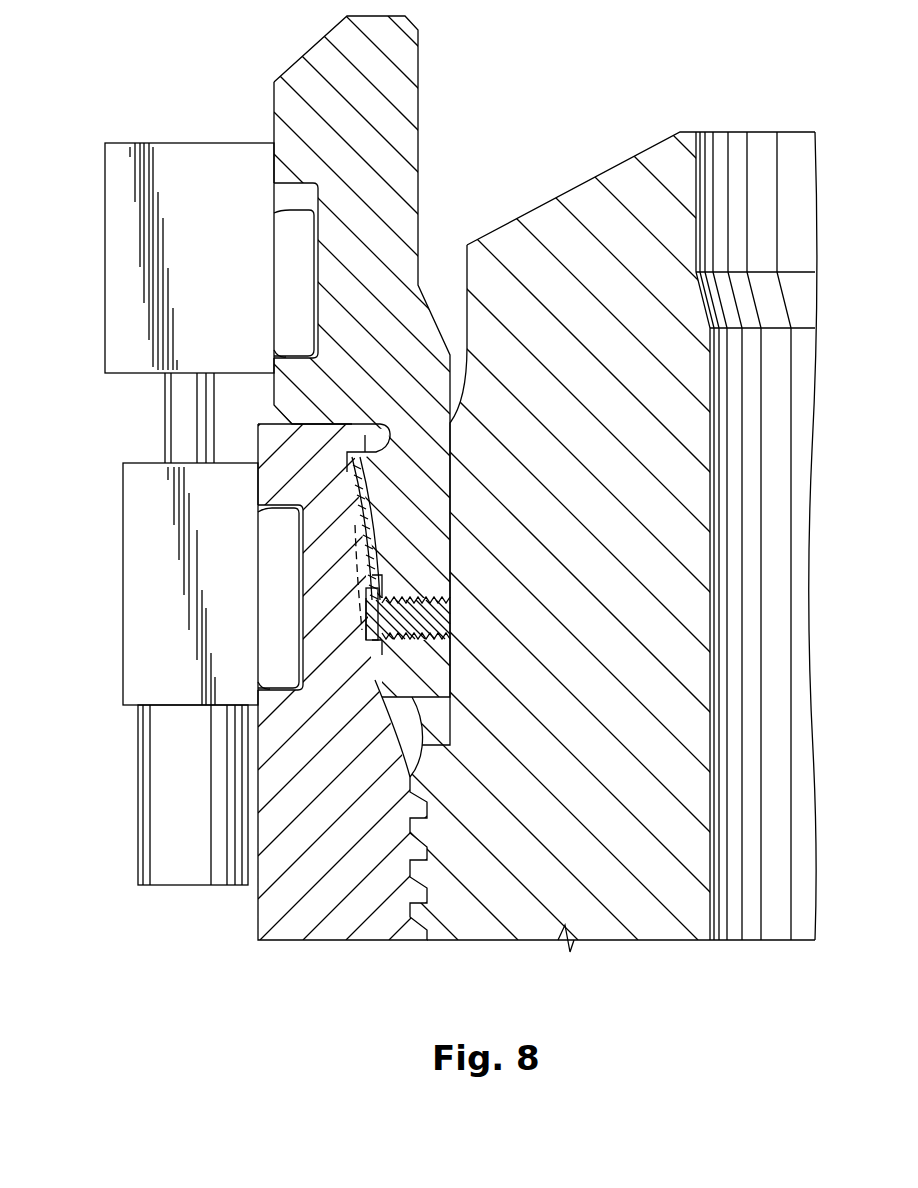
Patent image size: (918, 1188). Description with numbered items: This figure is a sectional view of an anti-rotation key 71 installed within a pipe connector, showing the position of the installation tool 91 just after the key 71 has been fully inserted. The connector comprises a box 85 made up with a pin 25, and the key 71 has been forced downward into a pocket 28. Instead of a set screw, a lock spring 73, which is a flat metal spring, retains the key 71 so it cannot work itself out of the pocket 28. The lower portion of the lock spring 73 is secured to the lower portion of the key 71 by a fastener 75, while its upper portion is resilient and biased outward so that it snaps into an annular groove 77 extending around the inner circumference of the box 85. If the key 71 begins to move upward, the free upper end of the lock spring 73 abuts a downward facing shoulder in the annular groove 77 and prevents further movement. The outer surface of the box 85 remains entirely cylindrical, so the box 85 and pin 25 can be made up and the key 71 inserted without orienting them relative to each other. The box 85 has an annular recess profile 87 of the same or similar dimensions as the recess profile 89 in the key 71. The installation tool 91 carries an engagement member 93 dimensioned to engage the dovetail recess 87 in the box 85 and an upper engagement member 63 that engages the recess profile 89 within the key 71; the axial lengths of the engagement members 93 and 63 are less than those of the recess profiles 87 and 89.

The pin 25 is at (652, 925).
The pocket 28 is at (438, 722).
The upper engagement member 63 is at (305, 225).
The key 71 is at (418, 117).
The lock spring 73 is at (355, 460).
The fastener 75 is at (368, 622).
The annular groove 77 is at (355, 492).
The box 85 is at (300, 922).
The annular recess profile 87 is at (300, 590).
The recess profile 89 is at (312, 262).
The installation tool 91 is at (120, 110).
The engagement member 93 is at (285, 647).